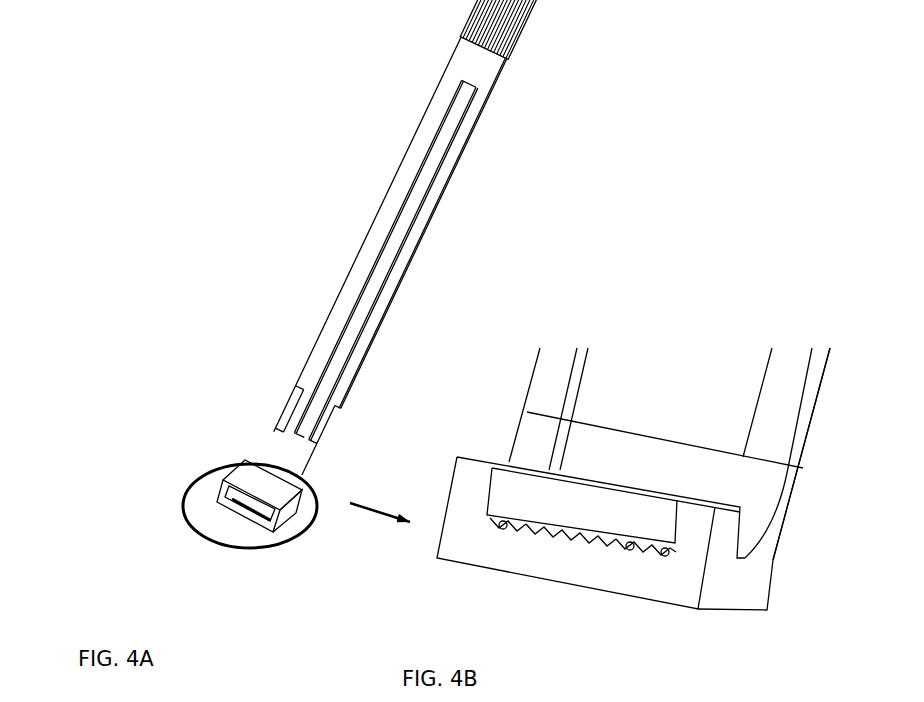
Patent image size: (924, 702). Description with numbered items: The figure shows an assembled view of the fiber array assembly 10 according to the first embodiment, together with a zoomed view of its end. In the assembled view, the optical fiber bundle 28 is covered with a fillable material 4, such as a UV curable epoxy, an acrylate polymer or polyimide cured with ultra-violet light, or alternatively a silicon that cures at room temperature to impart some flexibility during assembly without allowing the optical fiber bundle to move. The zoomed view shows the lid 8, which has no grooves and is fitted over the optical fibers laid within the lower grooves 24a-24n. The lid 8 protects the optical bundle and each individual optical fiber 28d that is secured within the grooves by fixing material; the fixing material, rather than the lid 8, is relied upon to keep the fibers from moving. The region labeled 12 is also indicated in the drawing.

In FIG. 4A, the illumination device / shaft 10 is at (58, 60).
In FIG. 4B, the illumination device / shaft 10 is at (621, 470).
In FIG. 4A, the elongated shaft 4 is at (388, 216).
In FIG. 4A, the optical fiber bundle 28 is at (509, 38).
In FIG. 4A, the distal head / handle portion 12 is at (170, 482).
In FIG. 4B, the distal head / handle portion 12 is at (794, 565).
In FIG. 4B, the window aperture 8 is at (566, 515).
In FIG. 4B, the first optical fiber end / tooth 24a is at (489, 529).
In FIG. 4B, the optical fiber distal end 28d is at (540, 533).
In FIG. 4B, the last optical fiber end / tooth 24n is at (670, 557).